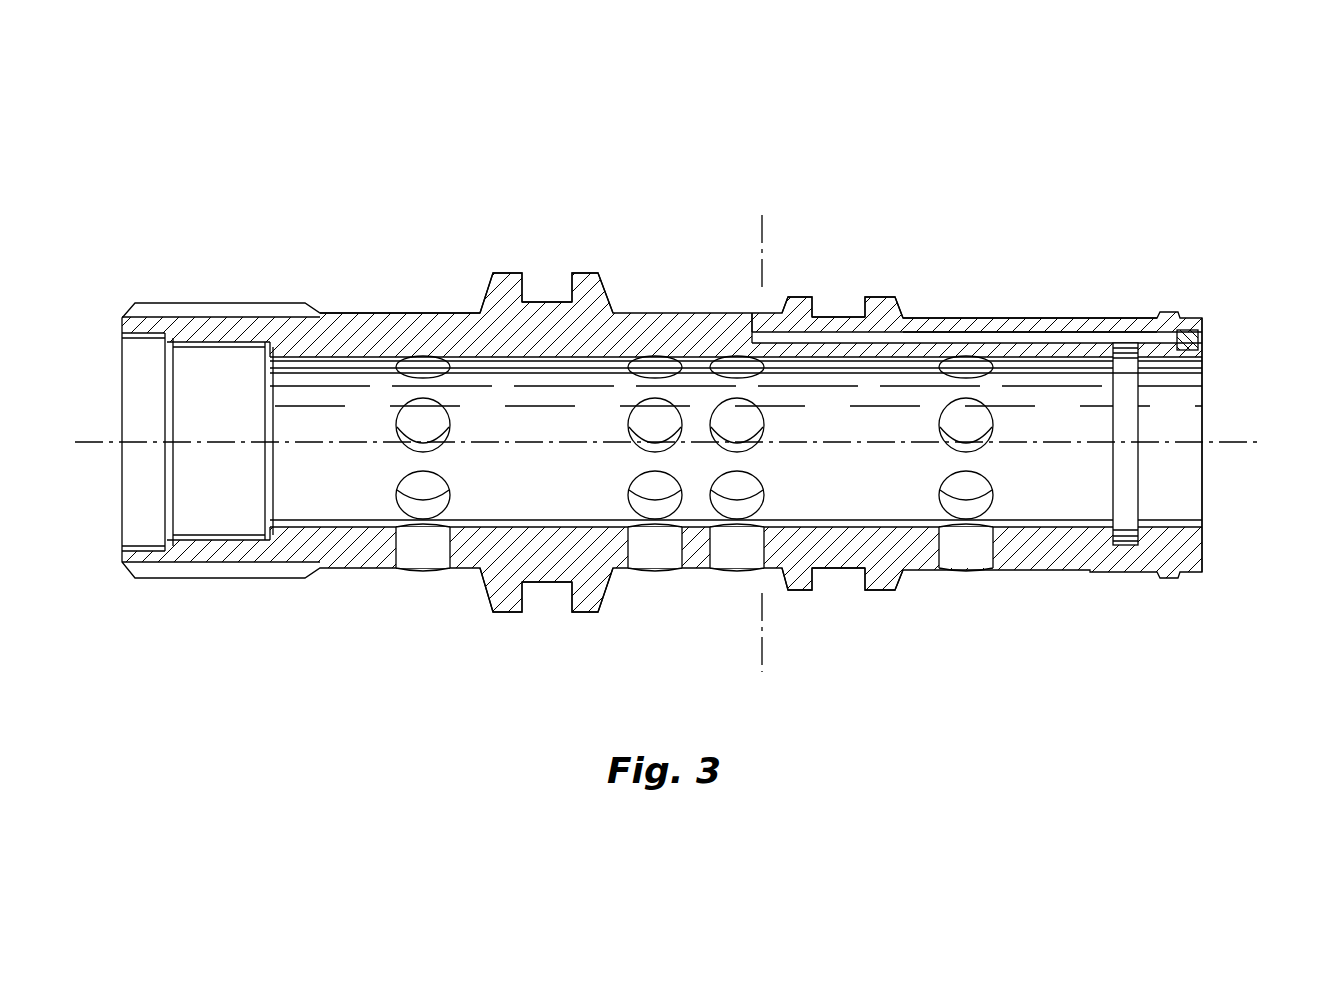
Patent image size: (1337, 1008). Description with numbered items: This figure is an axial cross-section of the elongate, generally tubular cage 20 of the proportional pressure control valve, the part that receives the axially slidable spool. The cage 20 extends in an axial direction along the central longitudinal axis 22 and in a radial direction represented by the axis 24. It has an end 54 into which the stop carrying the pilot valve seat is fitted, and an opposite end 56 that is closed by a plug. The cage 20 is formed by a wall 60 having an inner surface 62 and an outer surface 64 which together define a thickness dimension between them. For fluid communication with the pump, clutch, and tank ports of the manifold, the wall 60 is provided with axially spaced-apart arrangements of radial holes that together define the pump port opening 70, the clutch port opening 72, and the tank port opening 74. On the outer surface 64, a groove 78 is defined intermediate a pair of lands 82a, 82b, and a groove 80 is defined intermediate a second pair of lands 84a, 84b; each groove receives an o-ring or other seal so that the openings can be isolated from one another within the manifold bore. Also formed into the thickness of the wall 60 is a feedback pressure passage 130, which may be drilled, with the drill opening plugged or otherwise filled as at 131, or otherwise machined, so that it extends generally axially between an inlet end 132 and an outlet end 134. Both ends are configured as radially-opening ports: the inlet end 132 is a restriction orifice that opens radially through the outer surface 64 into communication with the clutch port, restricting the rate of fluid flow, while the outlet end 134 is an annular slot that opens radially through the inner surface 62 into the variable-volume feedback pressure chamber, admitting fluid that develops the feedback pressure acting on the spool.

The cage 20 is at (680, 412).
The central longitudinal axis 22 is at (83, 443).
The radial axis 24 is at (762, 237).
The end of the cage 54 is at (115, 318).
The other end of the cage 56 is at (1205, 540).
The wall 60 is at (668, 330).
The inner surface 62 is at (333, 378).
The outer surface 64 is at (427, 315).
The pump port opening 70 is at (962, 536).
The clutch port opening 72 is at (732, 540).
The tank port opening 74 is at (415, 538).
The groove 78 is at (838, 316).
The groove 80 is at (542, 287).
The land 82a is at (886, 296).
The land 82b is at (790, 296).
The land 84a is at (577, 272).
The land 84b is at (492, 272).
The feedback pressure passage 130 is at (945, 340).
The plug of drill opening 131 is at (1202, 338).
The inlet end 132 is at (762, 316).
The outlet end 134 is at (1118, 318).